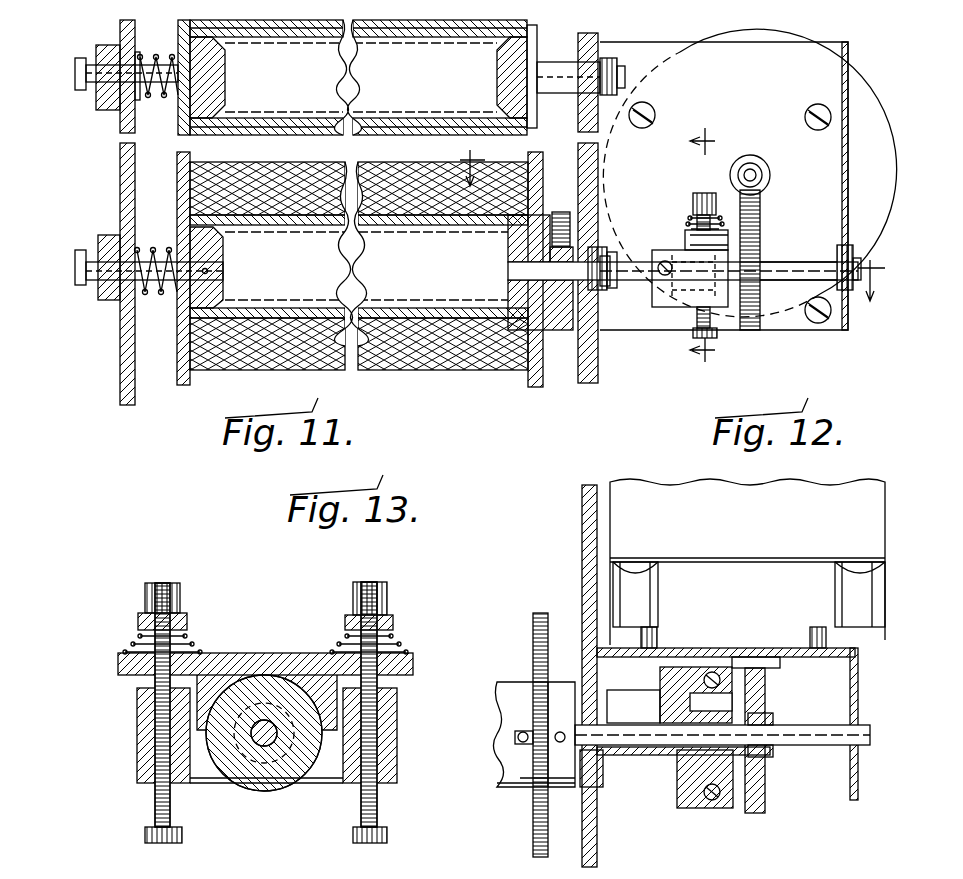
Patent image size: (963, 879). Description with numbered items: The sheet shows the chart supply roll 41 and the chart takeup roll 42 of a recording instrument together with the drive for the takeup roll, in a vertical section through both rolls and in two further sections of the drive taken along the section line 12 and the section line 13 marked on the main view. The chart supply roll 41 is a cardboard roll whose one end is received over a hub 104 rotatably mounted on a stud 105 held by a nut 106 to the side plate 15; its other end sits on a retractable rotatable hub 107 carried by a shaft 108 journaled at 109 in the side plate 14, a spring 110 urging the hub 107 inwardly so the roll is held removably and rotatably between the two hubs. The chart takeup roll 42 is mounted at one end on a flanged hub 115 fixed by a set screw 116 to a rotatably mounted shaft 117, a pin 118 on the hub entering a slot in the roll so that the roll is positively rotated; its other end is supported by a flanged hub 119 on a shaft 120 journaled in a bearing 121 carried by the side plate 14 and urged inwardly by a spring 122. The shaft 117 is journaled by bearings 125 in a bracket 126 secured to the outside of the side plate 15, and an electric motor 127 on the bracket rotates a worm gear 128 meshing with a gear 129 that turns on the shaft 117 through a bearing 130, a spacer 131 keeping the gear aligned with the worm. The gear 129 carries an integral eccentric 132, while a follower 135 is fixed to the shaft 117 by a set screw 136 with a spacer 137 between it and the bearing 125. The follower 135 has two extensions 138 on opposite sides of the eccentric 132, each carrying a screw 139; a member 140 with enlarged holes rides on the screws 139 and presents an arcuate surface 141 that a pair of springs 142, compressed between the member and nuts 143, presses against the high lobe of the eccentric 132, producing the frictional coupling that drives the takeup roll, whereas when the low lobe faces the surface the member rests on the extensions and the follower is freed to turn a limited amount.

In FIG. 11, the side plate 14 is at (120, 163).
In FIG. 11, the side plate 15 is at (580, 167).
In FIG. 12, the side plate 15 is at (584, 560).
In FIG. 11, the chart supply roll 41 is at (385, 135).
In FIG. 11, the chart takeup roll 42 is at (415, 310).
In FIG. 12, the chart takeup roll 42 is at (520, 787).
In FIG. 11, the hub 104 is at (497, 80).
In FIG. 11, the stud 105 is at (560, 92).
In FIG. 11, the nut 106 is at (606, 60).
In FIG. 11, the retractable rotatable hub 107 is at (222, 90).
In FIG. 11, the shaft 108 is at (105, 95).
In FIG. 11, the journal 109 is at (112, 58).
In FIG. 11, the spring 110 is at (158, 55).
In FIG. 11, the flanged hub 115 is at (508, 258).
In FIG. 11, the set screw 116 is at (560, 212).
In FIG. 12, the set screw 116 is at (560, 730).
In FIG. 11, the shaft 117 is at (508, 290).
In FIG. 12, the shaft 117 is at (800, 748).
In FIG. 13, the shaft 117 is at (268, 780).
In FIG. 11, the pin 118 is at (528, 212).
In FIG. 12, the pin 118 is at (518, 733).
In FIG. 11, the flanged hub 119 is at (222, 292).
In FIG. 11, the shaft 120 is at (108, 282).
In FIG. 11, the bearing 121 is at (98, 250).
In FIG. 11, the spring 122 is at (160, 293).
In FIG. 11, the bearings 125 is at (604, 292).
In FIG. 12, the bearings 125 is at (858, 735).
In FIG. 11, the bracket 126 is at (848, 186).
In FIG. 12, the bracket 126 is at (878, 650).
In FIG. 11, the electric motor 127 is at (846, 50).
In FIG. 12, the electric motor 127 is at (630, 485).
In FIG. 11, the worm gear 128 is at (763, 160).
In FIG. 12, the worm gear 128 is at (770, 668).
In FIG. 11, the gear 129 is at (762, 215).
In FIG. 12, the gear 129 is at (768, 700).
In FIG. 12, the bearing 130 is at (772, 757).
In FIG. 11, the spacer 131 is at (790, 260).
In FIG. 12, the spacer 131 is at (775, 722).
In FIG. 12, the eccentric 132 is at (745, 762).
In FIG. 13, the eccentric 132 is at (240, 790).
In FIG. 11, the follower 135 is at (665, 302).
In FIG. 12, the follower 135 is at (690, 808).
In FIG. 11, the set screw 136 is at (665, 260).
In FIG. 12, the set screw 136 is at (660, 785).
In FIG. 13, the set screw 136 is at (332, 785).
In FIG. 11, the spacer 137 is at (621, 280).
In FIG. 12, the spacer 137 is at (615, 757).
In FIG. 11, the extensions 138 is at (728, 300).
In FIG. 12, the extensions 138 is at (655, 648).
In FIG. 13, the extensions 138 is at (137, 752).
In FIG. 11, the screws 139 is at (702, 338).
In FIG. 12, the screws 139 is at (735, 648).
In FIG. 13, the screws 139 is at (155, 815).
In FIG. 11, the member 140 is at (690, 230).
In FIG. 12, the member 140 is at (668, 700).
In FIG. 13, the member 140 is at (228, 653).
In FIG. 13, the arcuate surface 141 is at (283, 670).
In FIG. 11, the springs 142 is at (700, 214).
In FIG. 13, the springs 142 is at (136, 640).
In FIG. 11, the nuts 143 is at (705, 193).
In FIG. 12, the nuts 143 is at (749, 594).
In FIG. 13, the nuts 143 is at (180, 600).
In FIG. 11, the section line 12— 12 is at (667, 213).
In FIG. 11, the section line 13— 13 is at (716, 240).